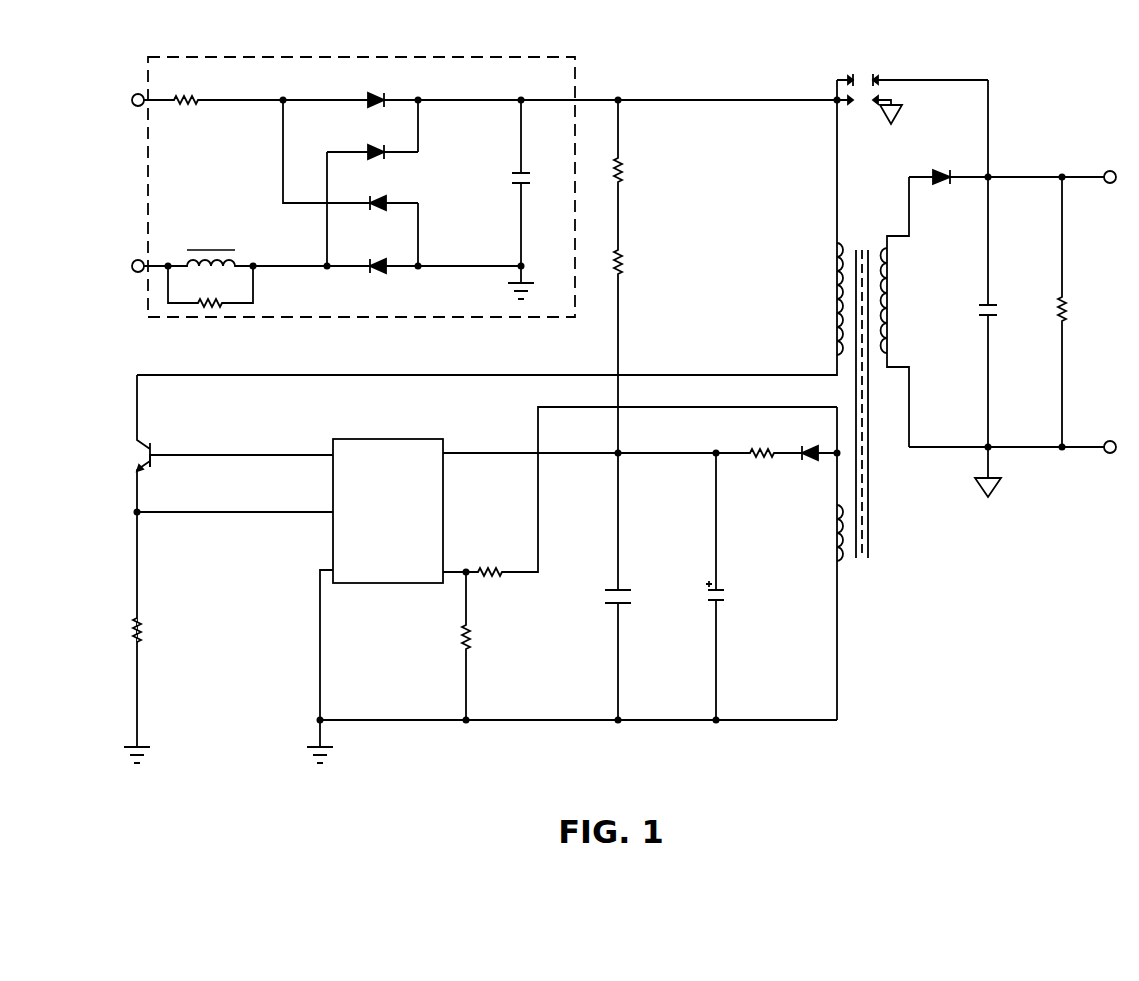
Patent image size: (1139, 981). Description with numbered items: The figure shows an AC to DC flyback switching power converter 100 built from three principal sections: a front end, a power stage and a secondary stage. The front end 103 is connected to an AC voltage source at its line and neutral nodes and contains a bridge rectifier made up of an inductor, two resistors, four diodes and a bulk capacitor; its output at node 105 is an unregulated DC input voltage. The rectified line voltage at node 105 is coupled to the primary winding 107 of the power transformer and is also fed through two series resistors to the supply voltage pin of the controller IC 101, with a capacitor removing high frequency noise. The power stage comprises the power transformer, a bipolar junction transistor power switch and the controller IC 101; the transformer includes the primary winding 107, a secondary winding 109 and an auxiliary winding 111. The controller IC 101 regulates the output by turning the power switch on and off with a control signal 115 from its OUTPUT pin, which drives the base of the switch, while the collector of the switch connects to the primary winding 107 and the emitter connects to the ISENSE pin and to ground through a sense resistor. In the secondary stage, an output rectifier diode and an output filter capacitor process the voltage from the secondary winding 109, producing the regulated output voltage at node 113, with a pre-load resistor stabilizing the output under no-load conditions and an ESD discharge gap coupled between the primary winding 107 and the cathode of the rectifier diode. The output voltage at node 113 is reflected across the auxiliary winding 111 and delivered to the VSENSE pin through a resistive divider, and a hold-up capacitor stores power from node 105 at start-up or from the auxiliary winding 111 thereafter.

The power converter 100 is at (996, 649).
The controller IC 101 is at (377, 439).
The front end 103 is at (428, 57).
The node 105 is at (618, 97).
The primary winding 107 is at (838, 262).
The secondary winding 109 is at (885, 258).
The auxiliary winding 111 is at (838, 525).
The node 113 is at (1062, 177).
The control signal 115 is at (215, 455).